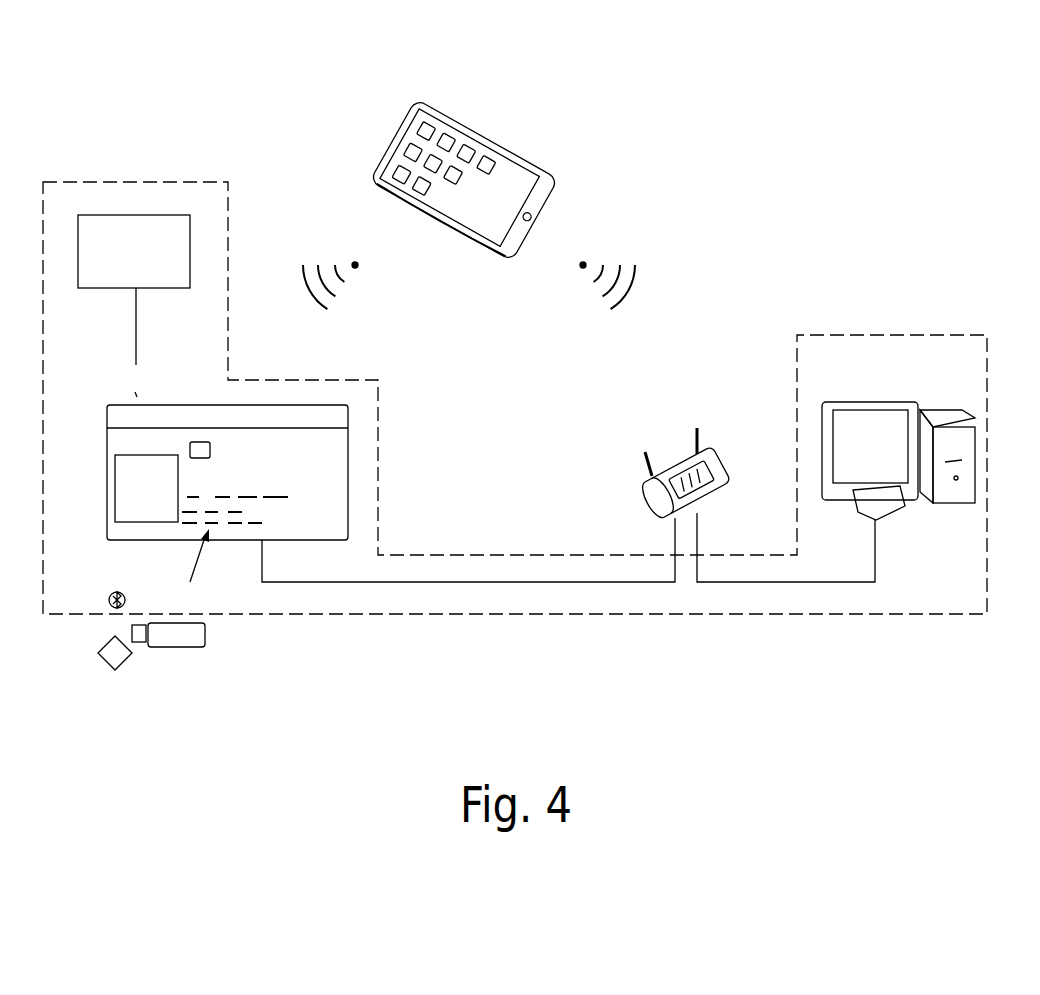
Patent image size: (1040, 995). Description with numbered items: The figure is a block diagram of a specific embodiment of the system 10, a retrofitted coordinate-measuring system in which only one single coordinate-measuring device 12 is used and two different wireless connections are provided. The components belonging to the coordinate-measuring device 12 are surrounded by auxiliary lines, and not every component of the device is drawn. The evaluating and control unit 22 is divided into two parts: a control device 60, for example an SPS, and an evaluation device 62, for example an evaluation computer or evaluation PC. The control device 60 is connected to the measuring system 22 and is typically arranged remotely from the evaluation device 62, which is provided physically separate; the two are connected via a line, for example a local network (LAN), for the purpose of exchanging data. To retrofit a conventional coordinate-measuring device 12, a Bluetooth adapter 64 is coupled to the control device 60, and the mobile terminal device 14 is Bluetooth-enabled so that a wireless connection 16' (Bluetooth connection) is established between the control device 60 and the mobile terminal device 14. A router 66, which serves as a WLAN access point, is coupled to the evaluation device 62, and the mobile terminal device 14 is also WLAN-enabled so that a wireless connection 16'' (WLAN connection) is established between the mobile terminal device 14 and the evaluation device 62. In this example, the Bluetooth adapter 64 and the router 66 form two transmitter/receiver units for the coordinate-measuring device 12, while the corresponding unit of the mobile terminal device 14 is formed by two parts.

The system 10 is at (728, 158).
The coordinate-measuring device 12 is at (540, 627).
The mobile terminal device 14 is at (486, 106).
The wireless connection 16' is at (356, 303).
The wireless connection 16'' is at (560, 303).
The evaluating and control unit 22 is at (149, 266).
The control device 60 is at (362, 467).
The evaluation device 62 is at (888, 327).
The Bluetooth adapter 64 is at (197, 664).
The router 66 is at (707, 364).